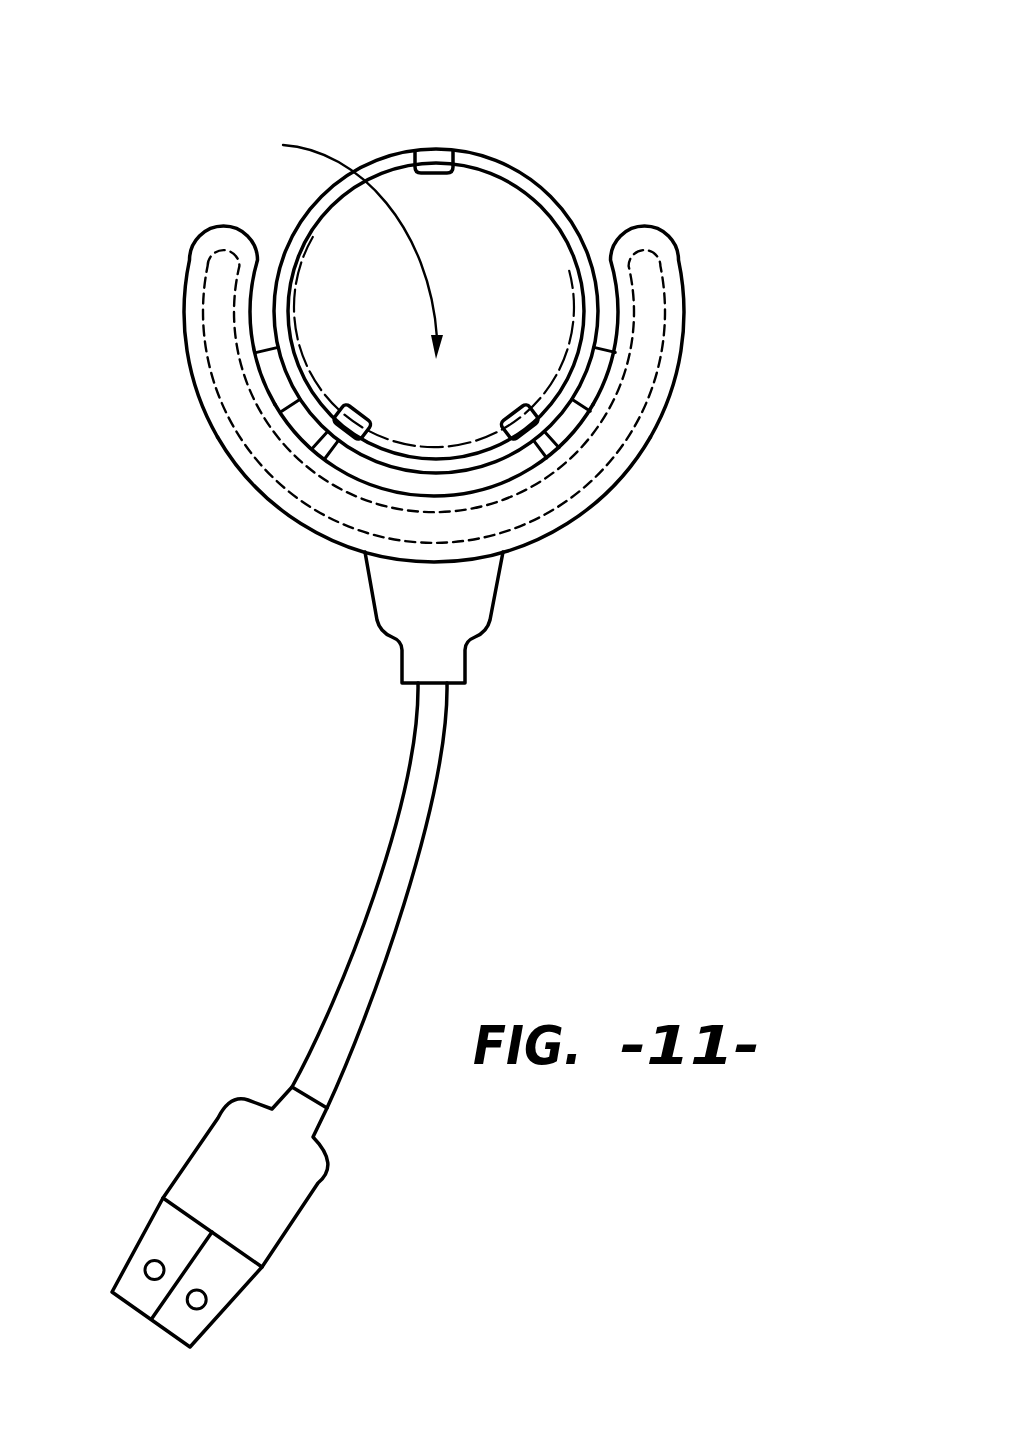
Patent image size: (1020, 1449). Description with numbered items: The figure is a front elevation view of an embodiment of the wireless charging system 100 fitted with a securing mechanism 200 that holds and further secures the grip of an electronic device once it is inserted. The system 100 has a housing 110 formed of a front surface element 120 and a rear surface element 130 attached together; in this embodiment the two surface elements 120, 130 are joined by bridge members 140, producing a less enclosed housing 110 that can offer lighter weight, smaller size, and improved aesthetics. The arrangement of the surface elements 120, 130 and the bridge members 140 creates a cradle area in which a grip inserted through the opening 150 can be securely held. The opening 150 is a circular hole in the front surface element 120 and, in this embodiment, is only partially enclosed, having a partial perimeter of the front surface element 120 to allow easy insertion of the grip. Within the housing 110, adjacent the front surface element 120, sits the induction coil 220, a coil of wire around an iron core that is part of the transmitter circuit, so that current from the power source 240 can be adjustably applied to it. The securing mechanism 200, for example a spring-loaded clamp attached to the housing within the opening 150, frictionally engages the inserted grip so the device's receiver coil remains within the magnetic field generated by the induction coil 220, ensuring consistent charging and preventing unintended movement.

The wireless charging system 100 is at (508, 92).
The housing 110 is at (218, 227).
The front surface element 120 is at (648, 228).
The rear surface element 130 is at (485, 242).
The bridge members 140 is at (274, 378).
The opening 150 is at (329, 244).
The securing mechanism 200 is at (344, 433).
The induction coil 220 is at (608, 466).
The power source 240 is at (470, 590).